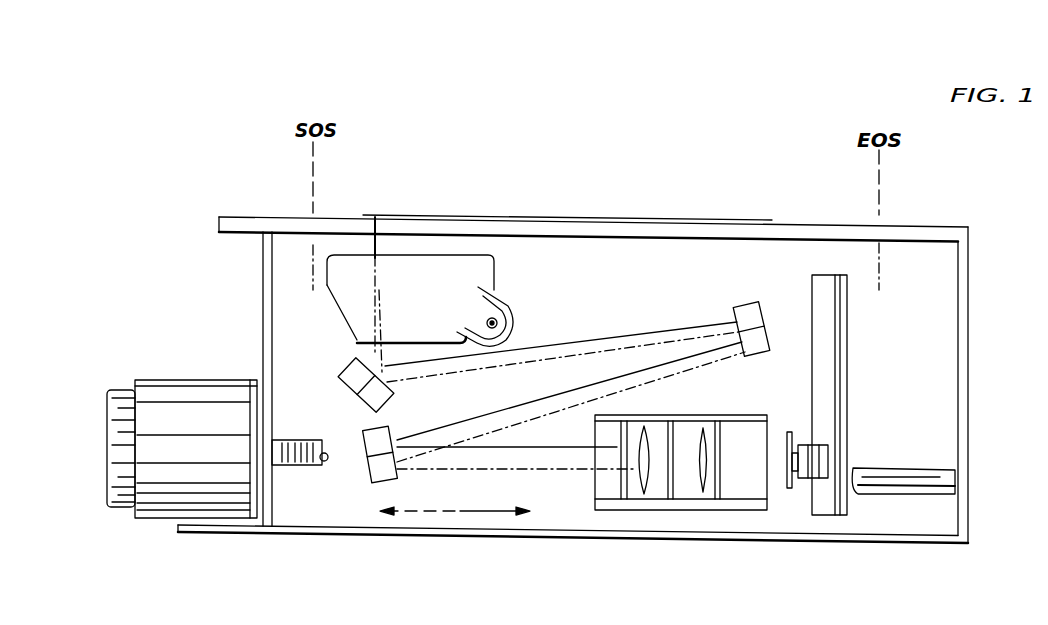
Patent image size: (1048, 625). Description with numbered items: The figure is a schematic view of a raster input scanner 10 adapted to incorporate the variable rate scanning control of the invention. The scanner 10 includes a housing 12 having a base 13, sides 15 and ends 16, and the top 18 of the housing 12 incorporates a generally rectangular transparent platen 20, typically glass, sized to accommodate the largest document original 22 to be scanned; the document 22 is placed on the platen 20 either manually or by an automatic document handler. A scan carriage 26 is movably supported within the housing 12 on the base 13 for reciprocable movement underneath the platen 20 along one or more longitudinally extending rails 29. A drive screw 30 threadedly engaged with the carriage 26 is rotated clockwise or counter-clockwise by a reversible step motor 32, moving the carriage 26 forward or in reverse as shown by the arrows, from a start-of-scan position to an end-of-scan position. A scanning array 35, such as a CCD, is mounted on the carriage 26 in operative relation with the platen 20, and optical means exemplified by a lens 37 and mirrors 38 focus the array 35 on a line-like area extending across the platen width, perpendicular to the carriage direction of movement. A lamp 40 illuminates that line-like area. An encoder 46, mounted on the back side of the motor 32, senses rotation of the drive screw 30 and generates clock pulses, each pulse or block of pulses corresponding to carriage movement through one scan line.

The raster input scanner 10 is at (432, 188).
The housing 12 is at (240, 260).
The base 13 is at (325, 532).
The sides 15 is at (935, 262).
The ends 16 is at (262, 300).
The top 18 is at (348, 218).
The platen 20 is at (680, 243).
The document original 22 is at (695, 222).
The scan carriage 26 is at (790, 508).
The rails 29 is at (905, 468).
The drive screw 30 is at (305, 440).
The step motor 32 is at (193, 380).
The scanning array 35 is at (808, 445).
The lens 37 is at (683, 487).
The mirrors 38 is at (387, 430).
The lamp 40 is at (513, 312).
The encoder 46 is at (118, 390).